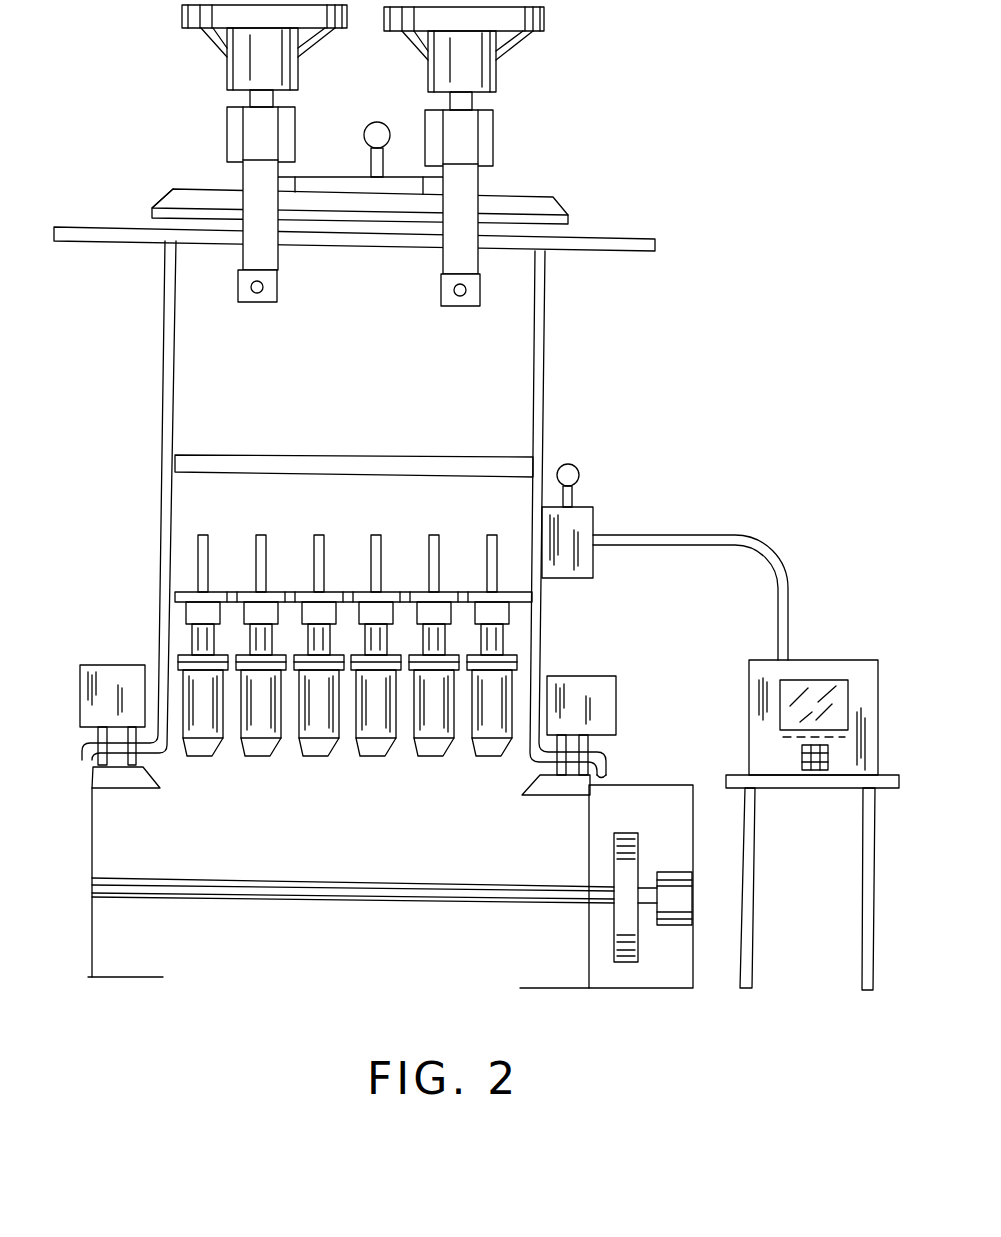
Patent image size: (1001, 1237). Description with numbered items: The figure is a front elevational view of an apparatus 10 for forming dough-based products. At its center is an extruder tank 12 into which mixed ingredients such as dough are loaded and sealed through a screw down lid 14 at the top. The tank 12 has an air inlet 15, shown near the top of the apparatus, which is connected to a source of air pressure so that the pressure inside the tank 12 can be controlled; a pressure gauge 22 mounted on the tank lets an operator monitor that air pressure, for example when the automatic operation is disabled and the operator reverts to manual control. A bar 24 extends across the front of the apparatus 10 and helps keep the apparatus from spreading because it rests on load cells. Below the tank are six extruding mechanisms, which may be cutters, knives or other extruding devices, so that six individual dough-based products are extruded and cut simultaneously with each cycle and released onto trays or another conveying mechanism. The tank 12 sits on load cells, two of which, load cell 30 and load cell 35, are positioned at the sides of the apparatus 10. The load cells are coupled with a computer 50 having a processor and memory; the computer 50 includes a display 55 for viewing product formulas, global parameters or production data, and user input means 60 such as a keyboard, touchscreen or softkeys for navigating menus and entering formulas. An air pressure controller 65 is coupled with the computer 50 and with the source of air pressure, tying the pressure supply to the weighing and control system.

The apparatus 10 is at (603, 387).
The extruder tank 12 is at (513, 330).
The screw down lid 14 is at (545, 203).
The air inlet 15 is at (572, 467).
The pressure gauge 22 is at (372, 131).
The bar 24 is at (222, 461).
The load cell 30 is at (577, 695).
The load cell 35 is at (98, 712).
The computer 50 is at (842, 668).
The display 55 is at (817, 690).
The user input means 60 is at (808, 772).
The air pressure controller 65 is at (585, 525).